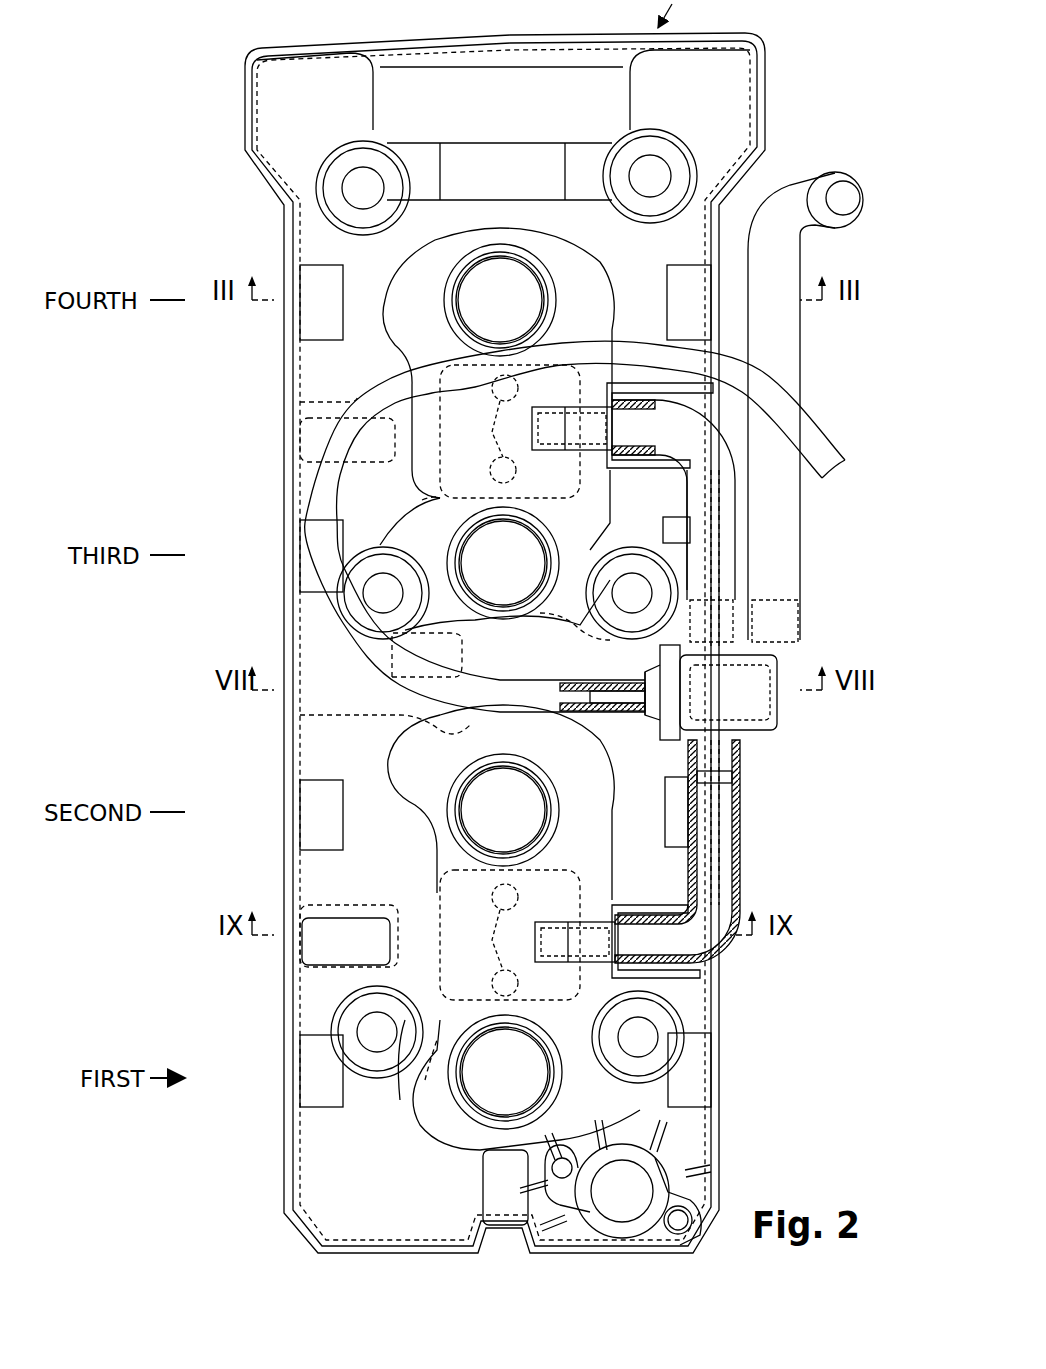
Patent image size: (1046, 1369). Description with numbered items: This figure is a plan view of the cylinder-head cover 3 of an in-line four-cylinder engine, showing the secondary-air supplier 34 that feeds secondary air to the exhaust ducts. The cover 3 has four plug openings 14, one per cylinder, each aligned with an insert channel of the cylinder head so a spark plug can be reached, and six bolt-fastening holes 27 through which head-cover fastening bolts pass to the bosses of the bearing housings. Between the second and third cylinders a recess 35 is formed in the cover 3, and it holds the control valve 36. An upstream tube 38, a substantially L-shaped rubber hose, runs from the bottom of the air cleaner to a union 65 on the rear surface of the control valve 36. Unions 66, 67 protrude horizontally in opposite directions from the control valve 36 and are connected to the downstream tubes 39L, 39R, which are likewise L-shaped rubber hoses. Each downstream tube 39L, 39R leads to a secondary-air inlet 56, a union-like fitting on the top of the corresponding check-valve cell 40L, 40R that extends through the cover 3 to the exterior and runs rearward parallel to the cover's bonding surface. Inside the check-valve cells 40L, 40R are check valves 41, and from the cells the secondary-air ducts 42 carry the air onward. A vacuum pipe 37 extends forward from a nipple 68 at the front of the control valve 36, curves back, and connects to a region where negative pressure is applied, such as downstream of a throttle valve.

The cylinder-head cover 3 is at (245, 102).
The plug opening 14 is at (467, 330).
The bolt-fastening hole 27 is at (340, 208).
The secondary-air supplier 34 is at (747, 718).
The recess 35 is at (628, 725).
The control valve 36 is at (778, 735).
The vacuum pipe 37 is at (340, 443).
The upstream tube 38 is at (800, 353).
The downstream tube 39R is at (735, 511).
The downstream tube 39L is at (739, 851).
The check-valve cell 40R is at (430, 400).
The check-valve cell 40L is at (432, 905).
The check valve 41 is at (430, 500).
The secondary-air duct 42 is at (492, 432).
The secondary-air inlet 56 is at (598, 405).
The union 65 is at (800, 640).
The union 66 is at (740, 795).
The union 67 is at (735, 598).
The nipple 68 is at (572, 670).